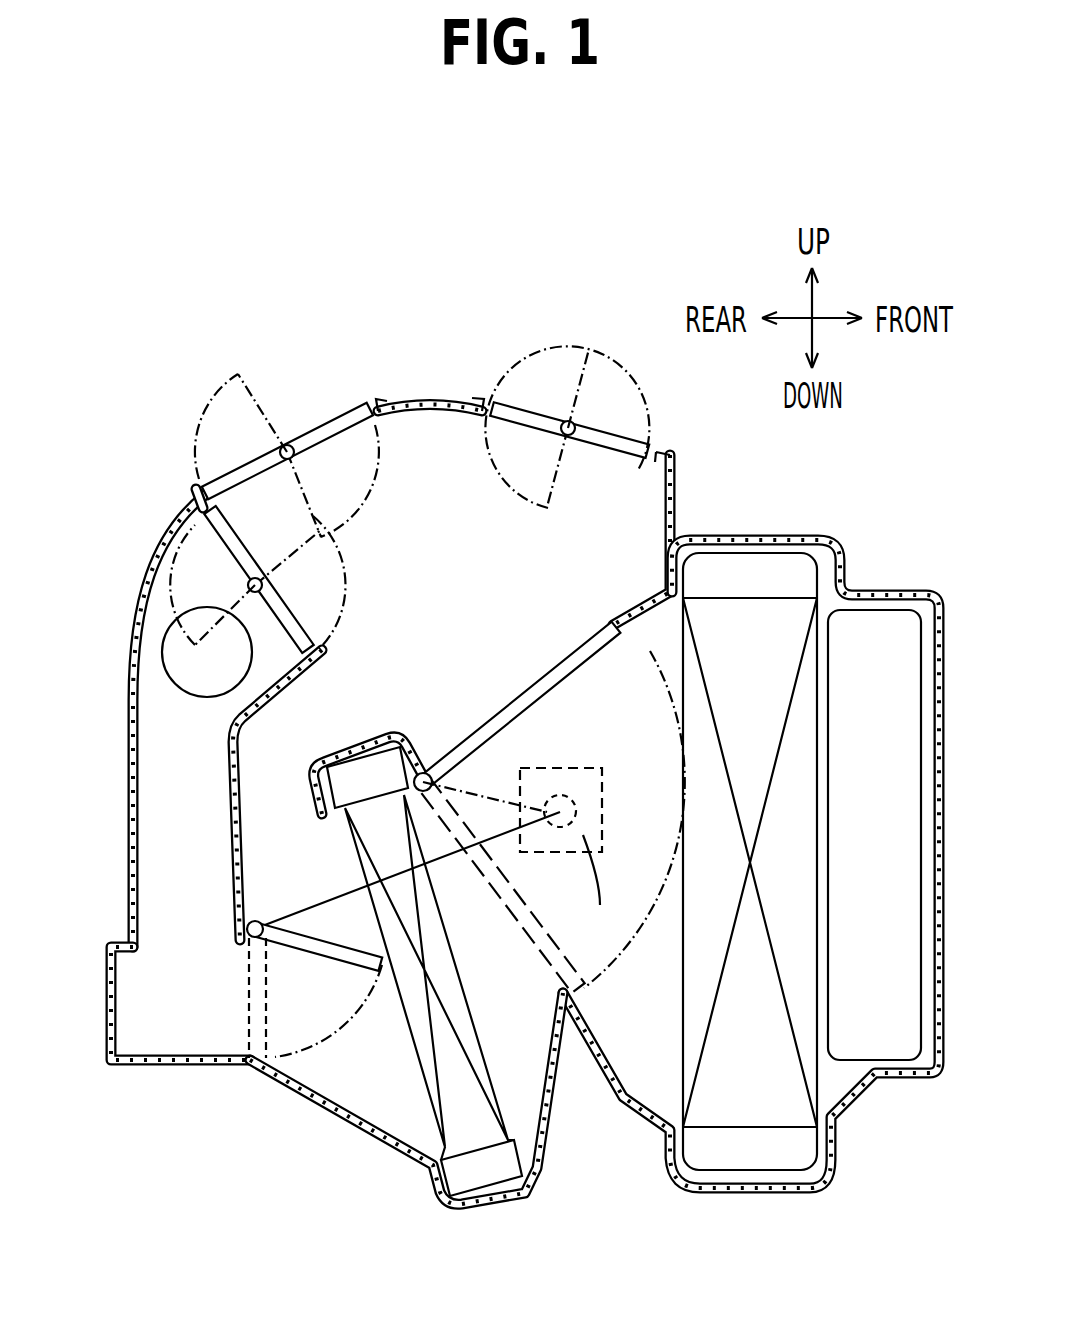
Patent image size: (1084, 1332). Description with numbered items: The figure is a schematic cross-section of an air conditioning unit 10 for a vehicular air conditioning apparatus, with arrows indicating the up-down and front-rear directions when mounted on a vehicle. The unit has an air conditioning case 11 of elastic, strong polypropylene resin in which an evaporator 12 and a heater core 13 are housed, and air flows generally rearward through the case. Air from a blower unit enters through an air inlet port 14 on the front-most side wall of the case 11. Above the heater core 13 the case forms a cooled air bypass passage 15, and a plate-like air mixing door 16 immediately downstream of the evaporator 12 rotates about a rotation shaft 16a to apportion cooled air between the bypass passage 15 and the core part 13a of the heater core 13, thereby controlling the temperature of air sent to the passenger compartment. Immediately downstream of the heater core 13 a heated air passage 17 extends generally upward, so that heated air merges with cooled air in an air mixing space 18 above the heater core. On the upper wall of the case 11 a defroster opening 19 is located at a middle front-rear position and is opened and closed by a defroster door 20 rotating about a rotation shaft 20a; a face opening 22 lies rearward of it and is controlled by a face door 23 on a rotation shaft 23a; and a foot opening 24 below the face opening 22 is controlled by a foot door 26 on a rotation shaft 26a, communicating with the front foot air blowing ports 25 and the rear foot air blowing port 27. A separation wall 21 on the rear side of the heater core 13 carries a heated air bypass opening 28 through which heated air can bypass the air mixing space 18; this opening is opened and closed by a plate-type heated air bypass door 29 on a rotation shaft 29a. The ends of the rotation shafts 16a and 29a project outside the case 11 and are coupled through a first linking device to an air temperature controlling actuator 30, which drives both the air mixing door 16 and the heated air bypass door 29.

The air conditioning unit 10 is at (848, 528).
The air conditioning case 11 is at (722, 536).
The evaporator 12 is at (748, 1097).
The heater core 13 is at (417, 1070).
The core part 13a is at (413, 977).
The air inlet port 14 is at (890, 997).
The cooled air bypass passage 15 is at (566, 682).
The air mixing door 16 is at (587, 645).
The rotation shaft 16a is at (423, 782).
The heated air passage 17 is at (300, 870).
The air mixing space 18 is at (446, 595).
The defroster opening 19 is at (512, 403).
The defroster door 20 is at (568, 420).
The rotation shaft 20a is at (580, 348).
The separation wall 21 is at (227, 742).
The face opening 22 is at (337, 412).
The face door 23 is at (305, 435).
The rotation shaft 23a is at (287, 440).
The foot opening 24 is at (210, 550).
The front foot air blowing ports 25 is at (200, 647).
The foot door 26 is at (240, 567).
The rotation shaft 26a is at (243, 583).
The rear foot air blowing port 27 is at (122, 1000).
The heated air bypass opening 28 is at (243, 997).
The heated air bypass door 29 is at (327, 952).
The rotation shaft 29a is at (247, 930).
The air temperature controlling actuator 30 is at (600, 905).